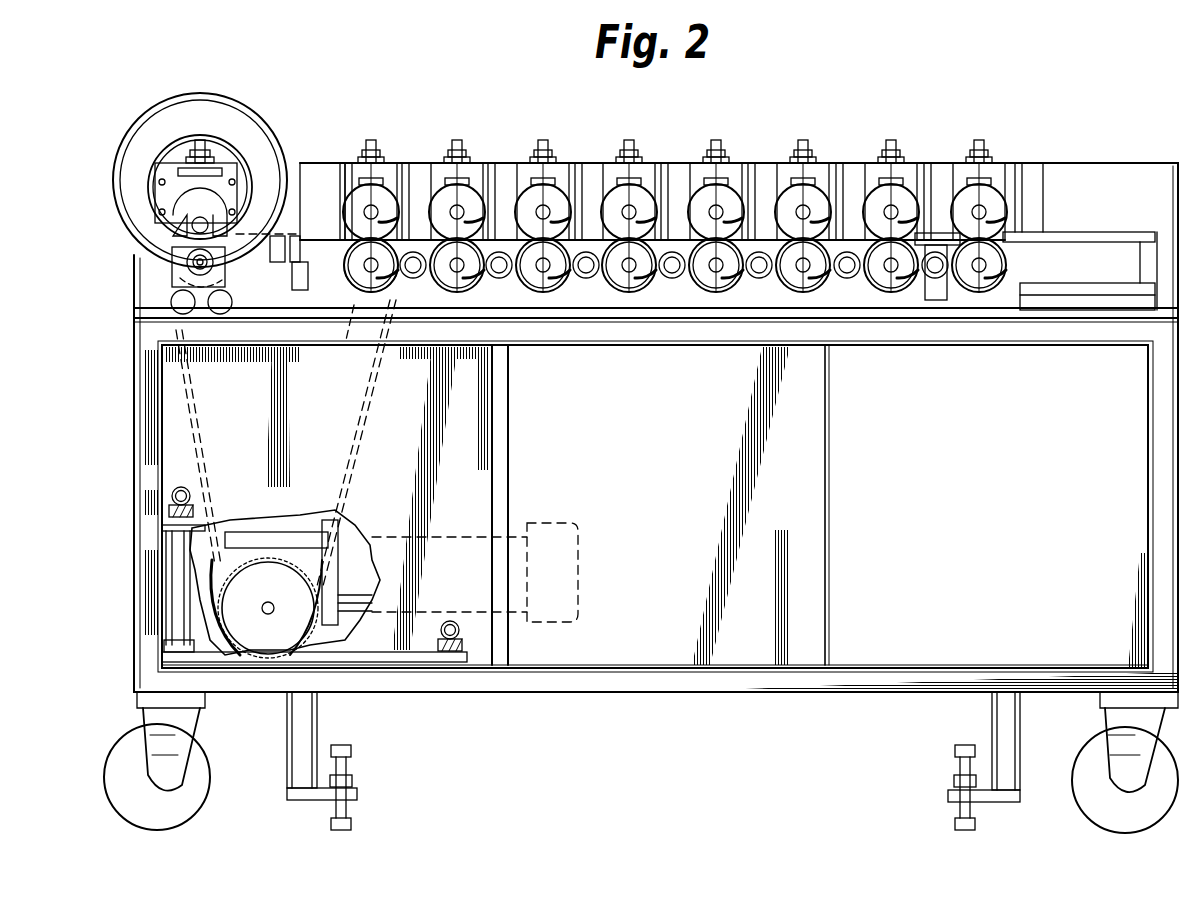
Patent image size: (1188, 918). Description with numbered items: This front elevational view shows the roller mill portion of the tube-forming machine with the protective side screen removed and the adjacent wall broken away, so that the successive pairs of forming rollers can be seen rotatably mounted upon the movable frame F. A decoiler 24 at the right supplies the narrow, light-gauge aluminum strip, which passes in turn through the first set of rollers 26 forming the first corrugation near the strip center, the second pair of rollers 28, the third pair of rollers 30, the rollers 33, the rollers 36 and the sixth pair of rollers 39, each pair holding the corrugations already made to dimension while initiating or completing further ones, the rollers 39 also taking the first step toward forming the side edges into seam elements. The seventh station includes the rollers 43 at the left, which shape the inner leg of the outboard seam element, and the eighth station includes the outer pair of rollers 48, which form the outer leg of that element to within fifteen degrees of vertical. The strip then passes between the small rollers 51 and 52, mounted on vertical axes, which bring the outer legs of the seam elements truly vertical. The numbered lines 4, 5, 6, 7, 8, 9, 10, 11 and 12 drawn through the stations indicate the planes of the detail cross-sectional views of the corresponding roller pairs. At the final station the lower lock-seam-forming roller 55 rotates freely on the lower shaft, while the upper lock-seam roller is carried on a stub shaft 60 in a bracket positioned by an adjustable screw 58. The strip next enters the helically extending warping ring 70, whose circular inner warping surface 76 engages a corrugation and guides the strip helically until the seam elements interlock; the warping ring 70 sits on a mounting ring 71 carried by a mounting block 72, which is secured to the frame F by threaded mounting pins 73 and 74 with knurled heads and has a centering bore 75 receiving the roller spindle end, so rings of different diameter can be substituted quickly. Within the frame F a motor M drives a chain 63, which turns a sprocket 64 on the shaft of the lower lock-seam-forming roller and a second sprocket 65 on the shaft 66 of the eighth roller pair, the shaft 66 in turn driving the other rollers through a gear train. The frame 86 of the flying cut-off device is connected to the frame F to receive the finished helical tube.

The movable frame F is at (688, 694).
The motor M is at (358, 567).
The section line 4 is at (992, 227).
The section line 5 is at (904, 227).
The section line 6 is at (816, 227).
The section line 7 is at (729, 227).
The section line 8 is at (642, 227).
The section line 9 is at (548, 227).
The section line 10 is at (466, 227).
The section line 11 is at (381, 227).
The section line 12 is at (242, 80).
The decoiler 24 is at (1100, 232).
The first set of rollers 26 is at (966, 200).
The second pair of rollers 28 is at (878, 200).
The third pair of rollers 30 is at (790, 200).
The fourth pair of rollers 33 is at (703, 200).
The fifth pair of rollers 36 is at (617, 200).
The sixth pair of rollers 39 is at (532, 198).
The left-hand rollers of the seventh set 43 is at (446, 196).
The outer pair of rollers of the eighth set 48 is at (360, 196).
The vertical-axis roller 51 is at (306, 262).
The vertical-axis roller 52 is at (288, 262).
The lower lock-seam-forming roller 55 is at (191, 225).
The adjustable screw 58 is at (237, 180).
The stub shaft 60 is at (170, 233).
The chain 63 is at (355, 435).
The sprocket 64 is at (172, 260).
The second sprocket 65 is at (348, 322).
The shaft 66 is at (352, 280).
The warping ring 70 is at (242, 99).
The mounting ring 71 is at (133, 164).
The mounting block 72 is at (193, 268).
The threaded mounting pin 73 is at (171, 300).
The threaded mounting pin 74 is at (232, 300).
The centering bore 75 is at (190, 280).
The circular inner warping surface 76 is at (178, 196).
The frame of the flying cut-off device 86 is at (192, 515).